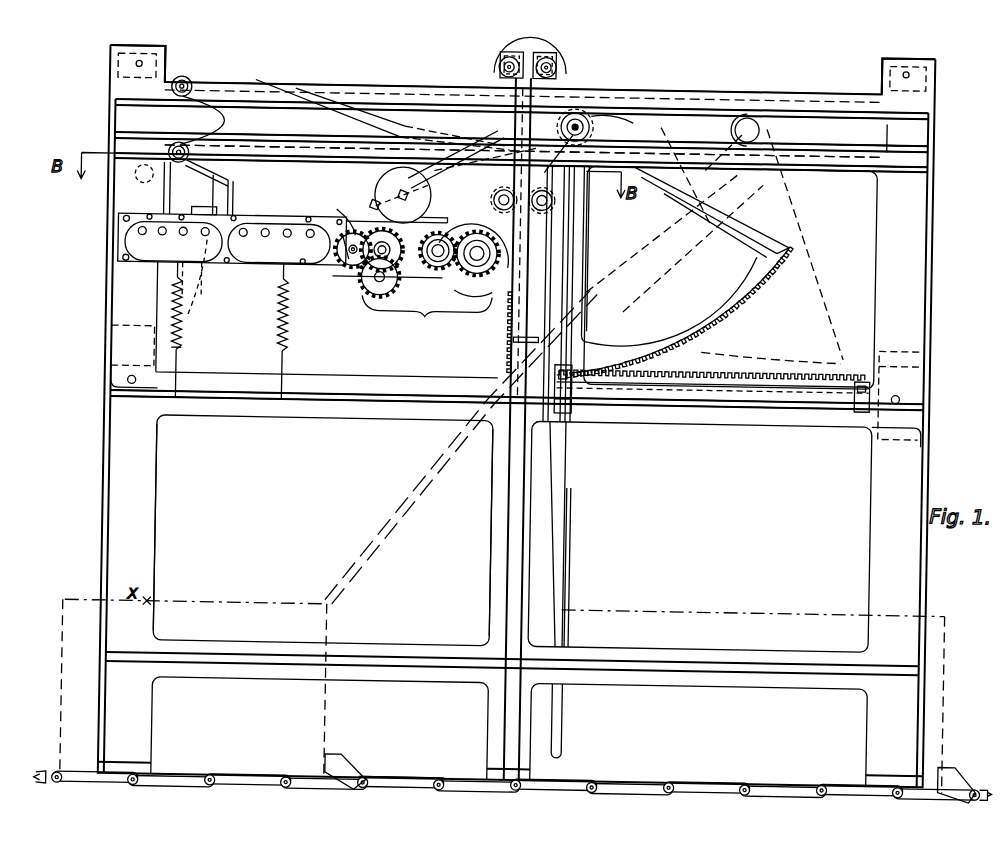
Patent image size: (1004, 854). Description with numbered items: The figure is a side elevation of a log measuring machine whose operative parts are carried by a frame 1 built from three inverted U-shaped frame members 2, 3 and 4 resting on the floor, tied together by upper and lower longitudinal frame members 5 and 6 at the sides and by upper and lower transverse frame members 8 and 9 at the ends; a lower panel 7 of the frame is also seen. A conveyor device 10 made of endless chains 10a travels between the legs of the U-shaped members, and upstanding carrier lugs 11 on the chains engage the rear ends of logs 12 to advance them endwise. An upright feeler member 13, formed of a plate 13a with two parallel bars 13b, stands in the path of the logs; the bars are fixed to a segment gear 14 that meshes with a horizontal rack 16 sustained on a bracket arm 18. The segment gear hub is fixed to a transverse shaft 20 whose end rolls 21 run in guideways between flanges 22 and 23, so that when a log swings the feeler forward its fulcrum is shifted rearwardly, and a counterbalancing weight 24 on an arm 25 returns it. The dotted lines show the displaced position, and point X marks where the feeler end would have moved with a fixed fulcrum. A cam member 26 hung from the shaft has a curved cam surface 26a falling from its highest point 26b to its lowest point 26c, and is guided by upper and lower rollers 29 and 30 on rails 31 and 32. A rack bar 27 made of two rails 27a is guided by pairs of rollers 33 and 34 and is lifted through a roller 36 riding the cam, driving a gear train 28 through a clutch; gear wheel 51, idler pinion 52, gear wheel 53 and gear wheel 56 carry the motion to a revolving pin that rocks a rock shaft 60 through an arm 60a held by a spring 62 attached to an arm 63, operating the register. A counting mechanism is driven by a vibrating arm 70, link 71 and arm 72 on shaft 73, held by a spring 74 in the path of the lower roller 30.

The frame 1 is at (323, 530).
The inverted U-shaped frame member 2 is at (158, 528).
The inverted U-shaped frame member 3 is at (488, 548).
The inverted U-shaped frame member 4 is at (700, 536).
The upper longitudinal frame member 5 is at (805, 168).
The lower longitudinal frame member 6 is at (773, 425).
The lower panel 7 is at (810, 684).
The upper transverse frame member 8 is at (156, 58).
The lower transverse frame member 9 is at (133, 340).
The conveyor device 10 is at (513, 774).
The endless chain 10a is at (406, 772).
The carrier lug 11 is at (350, 757).
The log 12 is at (328, 625).
The feeler member 13 is at (568, 421).
The plate 13a is at (573, 548).
The parallel bar 13b is at (562, 467).
The segment gear 14 is at (740, 312).
The rack 16 is at (769, 382).
The bracket arm 18 is at (575, 410).
The shaft 20 is at (586, 116).
The roll 21 is at (630, 122).
The flange 22 is at (828, 118).
The flange 23 is at (858, 146).
The counterbalancing weight 24 is at (370, 192).
The arm 25 is at (470, 186).
The cam member 26 is at (214, 124).
The cam surface 26a is at (610, 152).
The highest point of cam edge 26b is at (260, 88).
The lowest point of cam edge 26c is at (477, 150).
The rack bar 27 is at (535, 342).
The rail 27a is at (508, 304).
The gear train 28 is at (427, 309).
The upper roller 29 is at (182, 84).
The lower roller 30 is at (174, 170).
The rail 31 is at (333, 90).
The rail 32 is at (270, 166).
The upper rollers 33 is at (530, 54).
The lower rollers 34 is at (454, 180).
The roller 36 is at (478, 245).
The gear wheel 51 is at (462, 276).
The idler pinion 52 is at (428, 272).
The gear wheel 53 is at (386, 246).
The gear wheel 56 is at (358, 282).
The rock shaft 60 is at (339, 214).
The arm 60a is at (381, 276).
The spring 62 is at (288, 322).
The arm 63 is at (296, 222).
The vibrating arm 70 is at (209, 199).
The link 71 is at (229, 209).
The arm 72 is at (206, 272).
The shaft 73 is at (180, 320).
The spring 74 is at (180, 351).